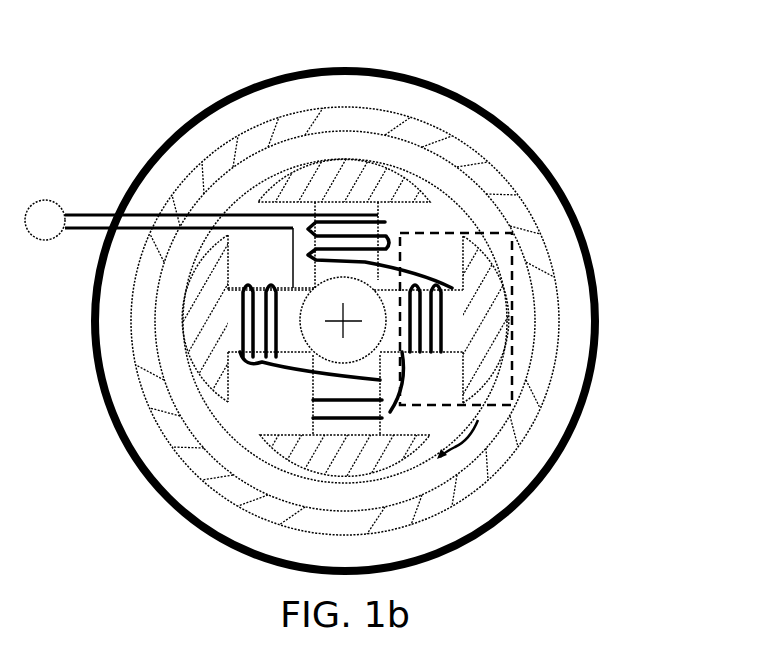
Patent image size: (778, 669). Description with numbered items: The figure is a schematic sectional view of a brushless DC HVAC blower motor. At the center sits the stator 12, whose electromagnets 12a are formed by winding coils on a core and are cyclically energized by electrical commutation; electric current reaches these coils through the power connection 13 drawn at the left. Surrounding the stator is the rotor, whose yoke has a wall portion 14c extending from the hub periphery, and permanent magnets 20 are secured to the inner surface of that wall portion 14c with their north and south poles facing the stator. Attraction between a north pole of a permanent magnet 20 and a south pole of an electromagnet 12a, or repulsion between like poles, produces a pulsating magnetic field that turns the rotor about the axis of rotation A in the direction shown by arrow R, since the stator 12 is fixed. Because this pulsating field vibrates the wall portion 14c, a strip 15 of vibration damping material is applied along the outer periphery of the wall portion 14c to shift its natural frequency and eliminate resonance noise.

The stator 12 is at (389, 306).
The electromagnet 12a is at (325, 198).
The lever 13 is at (45, 218).
The wall portion 14c is at (512, 150).
The strip of vibration damping material 15 is at (447, 90).
The permanent magnet 20 is at (533, 242).
The axis of rotation A is at (340, 326).
The direction of rotation arrow R is at (462, 440).